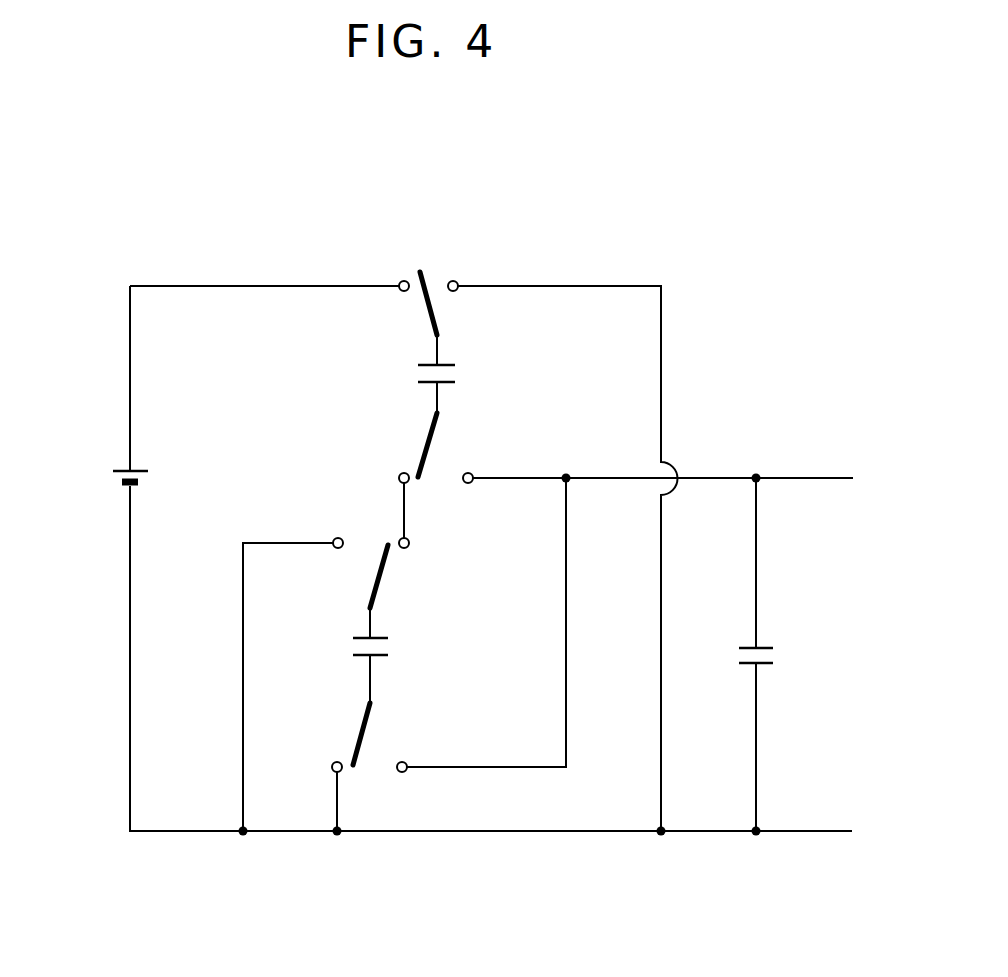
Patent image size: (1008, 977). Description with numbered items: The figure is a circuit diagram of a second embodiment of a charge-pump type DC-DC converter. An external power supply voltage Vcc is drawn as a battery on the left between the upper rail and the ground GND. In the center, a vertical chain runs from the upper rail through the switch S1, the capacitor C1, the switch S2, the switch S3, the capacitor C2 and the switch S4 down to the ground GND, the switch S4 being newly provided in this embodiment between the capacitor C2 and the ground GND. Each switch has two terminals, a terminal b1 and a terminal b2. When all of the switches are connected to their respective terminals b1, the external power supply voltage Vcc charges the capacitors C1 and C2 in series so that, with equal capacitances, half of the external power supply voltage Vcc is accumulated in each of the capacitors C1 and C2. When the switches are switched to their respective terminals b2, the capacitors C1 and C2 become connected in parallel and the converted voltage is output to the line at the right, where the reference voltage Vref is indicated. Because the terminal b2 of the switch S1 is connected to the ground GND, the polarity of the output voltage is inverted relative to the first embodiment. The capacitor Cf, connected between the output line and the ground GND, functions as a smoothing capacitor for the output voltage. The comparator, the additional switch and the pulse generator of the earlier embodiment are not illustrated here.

The switch S1 is at (450, 318).
The switch S2 is at (413, 445).
The switch S3 is at (363, 591).
The switch S4 is at (375, 734).
The capacitor C1 is at (421, 387).
The capacitor C2 is at (387, 670).
The smoothing capacitor Cf is at (769, 654).
The external power supply voltage Vcc is at (97, 472).
The reference voltage Vref is at (878, 480).
The ground GND is at (883, 832).
The terminal b1 is at (372, 528).
The terminal b2 is at (401, 528).